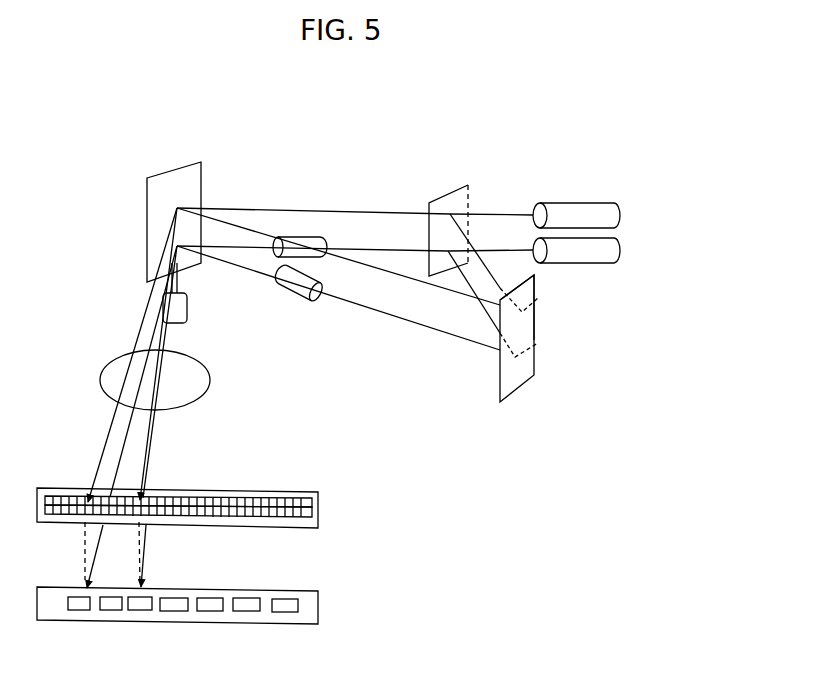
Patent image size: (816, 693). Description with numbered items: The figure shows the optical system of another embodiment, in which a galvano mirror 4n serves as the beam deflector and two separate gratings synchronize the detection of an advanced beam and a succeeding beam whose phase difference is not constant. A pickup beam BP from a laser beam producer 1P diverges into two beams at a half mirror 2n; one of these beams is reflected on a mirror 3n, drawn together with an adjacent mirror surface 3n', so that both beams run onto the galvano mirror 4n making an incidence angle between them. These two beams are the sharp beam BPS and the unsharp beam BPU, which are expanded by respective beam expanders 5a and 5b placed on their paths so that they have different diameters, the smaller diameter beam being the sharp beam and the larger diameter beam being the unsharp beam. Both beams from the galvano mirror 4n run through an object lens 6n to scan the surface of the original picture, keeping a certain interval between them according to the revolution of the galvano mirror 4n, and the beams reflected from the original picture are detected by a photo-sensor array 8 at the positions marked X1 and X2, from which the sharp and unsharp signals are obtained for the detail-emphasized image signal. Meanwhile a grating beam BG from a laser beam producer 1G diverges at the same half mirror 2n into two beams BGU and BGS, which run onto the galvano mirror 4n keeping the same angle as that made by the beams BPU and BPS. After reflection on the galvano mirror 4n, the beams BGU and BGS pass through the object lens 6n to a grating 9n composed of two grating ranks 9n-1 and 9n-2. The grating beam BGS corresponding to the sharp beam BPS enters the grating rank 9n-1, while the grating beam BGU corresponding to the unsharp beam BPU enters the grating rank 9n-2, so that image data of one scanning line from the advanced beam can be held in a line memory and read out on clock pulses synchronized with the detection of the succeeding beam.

The galvano mirror 4n is at (147, 225).
The beam expander 5a is at (297, 287).
The beam expander 5b is at (272, 251).
The half mirror 2n is at (445, 202).
The laser beam producer 1G is at (572, 212).
The laser beam producer 1P is at (597, 257).
The mirror 3n is at (552, 338).
The mirror surface 3n' is at (551, 312).
The object lens 6n is at (110, 378).
The grating 9n is at (248, 509).
The grating rank 9n-1 is at (315, 504).
The grating rank 9n-2 is at (315, 513).
The photo-sensor array 8 is at (57, 610).
The grating beam BGU is at (77, 448).
The unsharp beam BPU is at (345, 247).
The grating beam BGS is at (145, 463).
The sharp beam BPS is at (387, 317).
The grating beam BG is at (494, 251).
The pickup beam BP is at (493, 293).
The position X1 is at (126, 581).
The position X2 is at (101, 581).